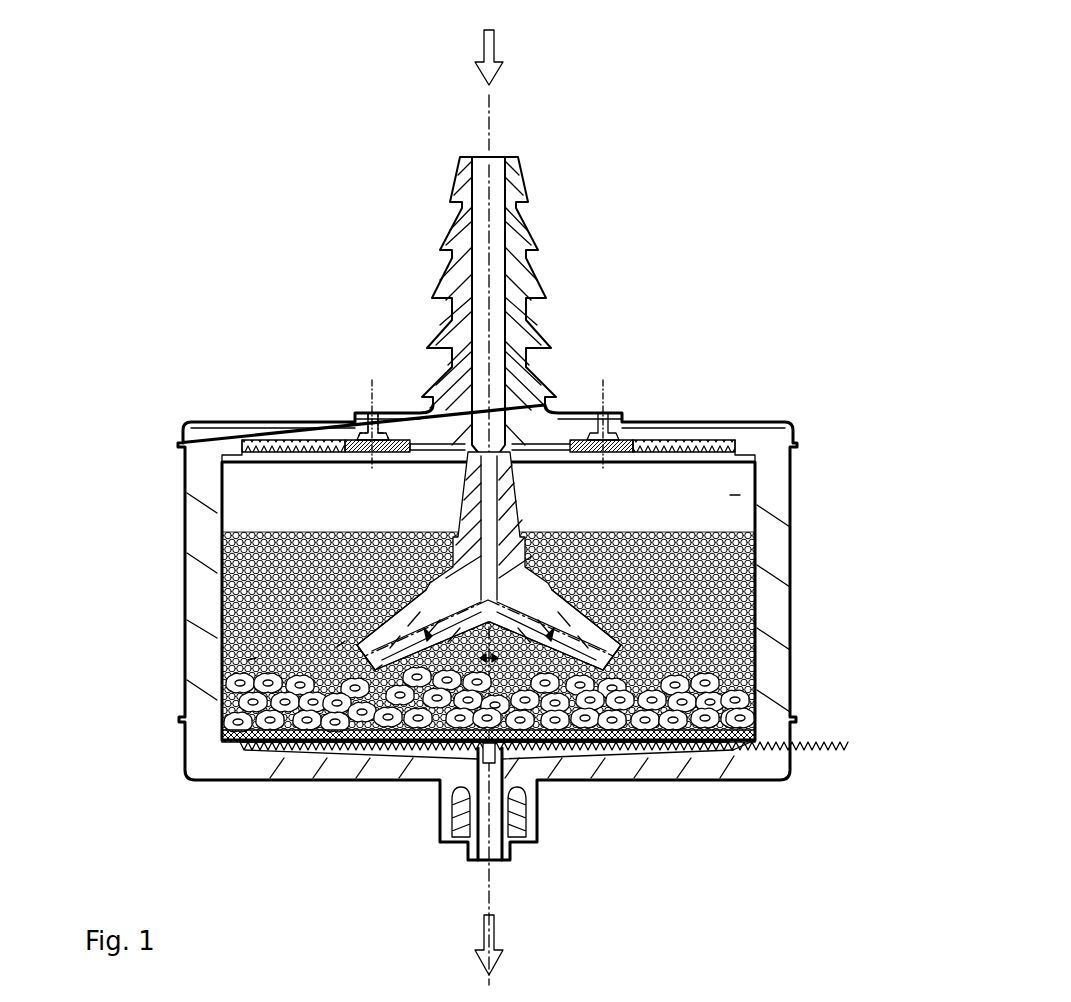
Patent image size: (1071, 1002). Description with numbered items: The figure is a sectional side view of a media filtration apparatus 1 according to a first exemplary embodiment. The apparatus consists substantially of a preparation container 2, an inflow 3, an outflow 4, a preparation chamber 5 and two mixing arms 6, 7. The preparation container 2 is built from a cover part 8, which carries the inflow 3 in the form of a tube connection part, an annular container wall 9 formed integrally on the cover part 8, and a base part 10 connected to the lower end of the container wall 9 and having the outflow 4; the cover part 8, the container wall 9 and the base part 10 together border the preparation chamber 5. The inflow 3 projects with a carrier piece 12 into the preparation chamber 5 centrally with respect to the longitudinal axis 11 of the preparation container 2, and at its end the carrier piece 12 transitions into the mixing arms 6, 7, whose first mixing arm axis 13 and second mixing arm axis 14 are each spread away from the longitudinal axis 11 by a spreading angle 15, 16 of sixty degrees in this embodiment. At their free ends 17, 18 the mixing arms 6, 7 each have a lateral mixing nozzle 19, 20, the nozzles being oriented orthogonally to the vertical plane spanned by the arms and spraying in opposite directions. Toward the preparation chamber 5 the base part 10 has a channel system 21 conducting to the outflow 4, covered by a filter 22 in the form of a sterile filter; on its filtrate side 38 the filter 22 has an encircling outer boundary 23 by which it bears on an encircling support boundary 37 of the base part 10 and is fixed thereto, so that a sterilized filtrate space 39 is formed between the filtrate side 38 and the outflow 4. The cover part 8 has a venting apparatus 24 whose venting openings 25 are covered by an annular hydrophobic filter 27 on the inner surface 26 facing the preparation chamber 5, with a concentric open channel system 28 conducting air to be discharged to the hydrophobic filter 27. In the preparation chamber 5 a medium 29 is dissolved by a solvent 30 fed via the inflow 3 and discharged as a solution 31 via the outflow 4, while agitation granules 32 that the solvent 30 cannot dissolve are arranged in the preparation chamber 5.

The media filtration apparatus 1 is at (237, 132).
The preparation container 2 is at (150, 471).
The inflow 3 is at (497, 200).
The outflow 4 is at (468, 855).
The preparation chamber 5 is at (730, 495).
The first mixing arm 6 is at (590, 615).
The second mixing arm 7 is at (357, 645).
The cover part 8 is at (690, 430).
The container wall 9 is at (762, 662).
The base part 10 is at (680, 772).
The longitudinal axis 11 is at (493, 125).
The carrier piece 12 is at (507, 530).
The first mixing arm axis 13 is at (560, 593).
The second mixing arm axis 14 is at (489, 561).
The spreading angle 15 is at (550, 742).
The spreading angle 16 is at (390, 752).
The free end 17 is at (615, 652).
The free end 18 is at (373, 670).
The mixing nozzle 19 is at (747, 688).
The mixing nozzle 20 is at (337, 647).
The channel system 21 is at (603, 753).
The filter 22 is at (695, 783).
The outer boundary 23 is at (735, 750).
The venting apparatus 24 is at (352, 457).
The venting openings 25 is at (370, 412).
The inner surface 26 is at (382, 447).
The hydrophobic filter 27 is at (637, 445).
The open channel system 28 is at (283, 472).
The medium 29 is at (248, 660).
The solvent 30 is at (503, 42).
The solution 31 is at (500, 932).
The agitation granules 32 is at (222, 712).
The support boundary 37 is at (742, 718).
The filtrate side 38 is at (505, 785).
The filtrate space 39 is at (480, 754).